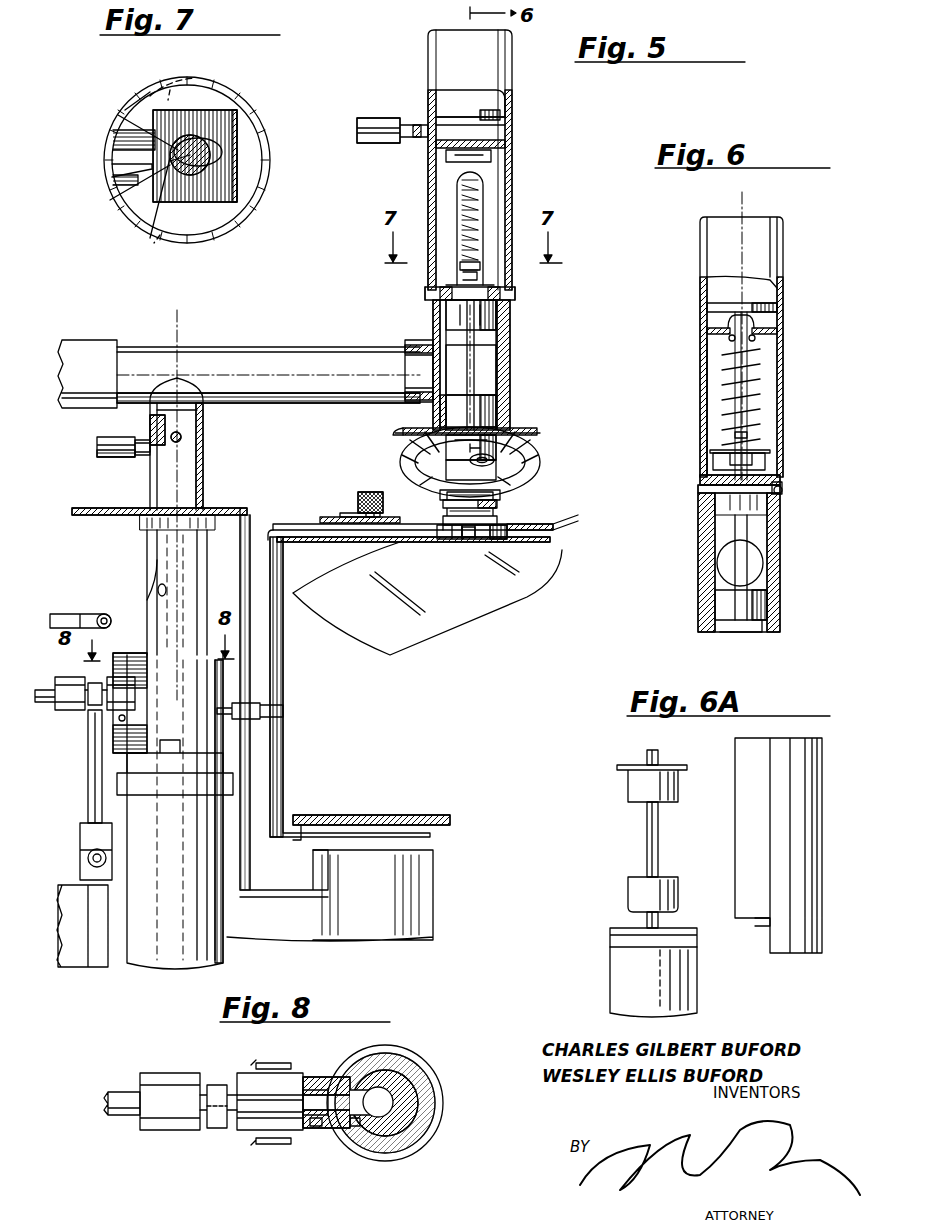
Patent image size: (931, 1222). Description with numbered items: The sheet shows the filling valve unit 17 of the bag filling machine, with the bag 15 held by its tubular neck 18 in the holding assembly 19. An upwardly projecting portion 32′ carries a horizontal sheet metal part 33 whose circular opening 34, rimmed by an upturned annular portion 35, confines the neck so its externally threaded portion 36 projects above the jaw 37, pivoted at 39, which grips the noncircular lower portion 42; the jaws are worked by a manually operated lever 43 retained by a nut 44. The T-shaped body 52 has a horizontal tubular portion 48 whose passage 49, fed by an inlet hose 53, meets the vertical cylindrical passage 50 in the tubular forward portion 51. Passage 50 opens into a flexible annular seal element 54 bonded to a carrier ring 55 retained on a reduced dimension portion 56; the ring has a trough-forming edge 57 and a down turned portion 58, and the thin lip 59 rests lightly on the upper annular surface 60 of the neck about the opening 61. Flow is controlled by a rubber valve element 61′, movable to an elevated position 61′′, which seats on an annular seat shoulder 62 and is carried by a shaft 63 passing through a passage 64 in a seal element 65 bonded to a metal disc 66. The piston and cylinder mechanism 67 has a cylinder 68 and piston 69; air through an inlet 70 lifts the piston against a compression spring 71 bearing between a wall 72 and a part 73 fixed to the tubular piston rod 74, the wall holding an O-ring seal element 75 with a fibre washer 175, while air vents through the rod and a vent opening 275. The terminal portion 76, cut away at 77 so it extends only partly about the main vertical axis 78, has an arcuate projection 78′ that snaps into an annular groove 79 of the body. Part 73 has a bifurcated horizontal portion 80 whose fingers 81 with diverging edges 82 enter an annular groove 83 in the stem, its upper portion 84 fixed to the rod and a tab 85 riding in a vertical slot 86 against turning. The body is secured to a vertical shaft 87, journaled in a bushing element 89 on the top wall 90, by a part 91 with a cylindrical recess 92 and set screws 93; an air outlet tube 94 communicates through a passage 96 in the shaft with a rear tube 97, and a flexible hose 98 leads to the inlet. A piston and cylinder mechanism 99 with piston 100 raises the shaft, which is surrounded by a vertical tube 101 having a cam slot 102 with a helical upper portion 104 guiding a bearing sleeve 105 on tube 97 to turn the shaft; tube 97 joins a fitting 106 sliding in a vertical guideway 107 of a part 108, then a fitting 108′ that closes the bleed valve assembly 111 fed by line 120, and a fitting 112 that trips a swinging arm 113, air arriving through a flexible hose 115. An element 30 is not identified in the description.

In FIG. 5, the bag 15 is at (478, 620).
In FIG. 5, the filling valve unit 17 is at (514, 374).
In FIG. 5, the inlet fitting or neck 18 is at (445, 514).
In FIG. 5, the holding assembly 19 is at (553, 523).
In FIG. 5, the base 30 is at (360, 800).
In FIG. 5, the upwardly projecting portion 32′ is at (288, 780).
In FIG. 5, the horizontal sheet metal part 33 is at (352, 543).
In FIG. 5, the circular opening 34 is at (446, 541).
In FIG. 5, the upturned annular portion 35 is at (502, 541).
In FIG. 5, the externally threaded portion 36 is at (500, 502).
In FIG. 5, the jaw 37 is at (324, 516).
In FIG. 5, the pivot 39 is at (296, 523).
In FIG. 5, the lower portion of filling neck 42 is at (465, 541).
In FIG. 5, the manually operated lever 43 is at (345, 512).
In FIG. 5, the nut 44 is at (370, 490).
In FIG. 5, the horizontal tubular portion 48 is at (310, 345).
In FIG. 5, the passage 49 is at (412, 348).
In FIG. 5, the vertical cylindrical passage 50 is at (496, 345).
In FIG. 5, the tubular forward portion 51 is at (510, 318).
In FIG. 6, the tubular forward portion 51 is at (782, 592).
In FIG. 6A, the tubular forward portion 51 is at (612, 985).
In FIG. 5, the T-shaped body 52 is at (512, 395).
In FIG. 5, the inlet hose 53 is at (100, 342).
In FIG. 5, the flexible annular seal element 54 is at (540, 465).
In FIG. 5, the carrier ring 55 is at (536, 428).
In FIG. 5, the lower reduced dimension portion 56 is at (512, 447).
In FIG. 5, the edge 57 is at (540, 433).
In FIG. 5, the down turned portion 58 is at (402, 432).
In FIG. 5, the flexible lip 59 is at (530, 486).
In FIG. 5, the upper annular surface 60 is at (490, 470).
In FIG. 5, the opening 61 is at (452, 480).
In FIG. 5, the valve element 61′ is at (440, 412).
In FIG. 6, the valve element 61′ is at (715, 605).
In FIG. 6A, the valve element 61′ is at (630, 891).
In FIG. 5, the elevated position of valve element 61′′ is at (456, 342).
In FIG. 5, the annular seat shoulder 62 is at (498, 420).
In FIG. 7, the shaft 63 is at (195, 170).
In FIG. 5, the shaft 63 is at (476, 372).
In FIG. 6, the shaft 63 is at (743, 550).
In FIG. 6A, the shaft 63 is at (648, 834).
In FIG. 5, the passage 64 is at (430, 302).
In FIG. 5, the seal or gasket element 65 is at (448, 290).
In FIG. 6, the seal or gasket element 65 is at (718, 515).
In FIG. 6A, the seal or gasket element 65 is at (630, 785).
In FIG. 7, the metal disc 66 is at (244, 177).
In FIG. 5, the metal disc 66 is at (492, 285).
In FIG. 5, the piston and cylinder mechanism 67 is at (522, 150).
In FIG. 6, the piston and cylinder mechanism 67 is at (700, 270).
In FIG. 7, the cylinder 68 is at (262, 134).
In FIG. 6, the cylinder 68 is at (783, 325).
In FIG. 6A, the cylinder 68 is at (823, 848).
In FIG. 5, the piston 69 is at (505, 115).
In FIG. 6, the piston 69 is at (762, 290).
In FIG. 5, the inlet 70 is at (410, 123).
In FIG. 5, the compression spring 71 is at (485, 195).
In FIG. 6, the compression spring 71 is at (762, 380).
In FIG. 5, the wall 72 is at (505, 168).
In FIG. 6, the wall 72 is at (765, 338).
In FIG. 7, the part 73 is at (245, 153).
In FIG. 6, the part 73 is at (772, 442).
In FIG. 6, the tubular piston rod 74 is at (738, 378).
In FIG. 6, the O-ring seal element 75 is at (728, 325).
In FIG. 6, the terminal portion 76 is at (782, 492).
In FIG. 6A, the terminal portion 76 is at (820, 955).
In FIG. 7, the cut away 77 is at (156, 256).
In FIG. 6A, the cut away 77 is at (770, 940).
In FIG. 6, the main vertical axis 78 is at (748, 199).
In FIG. 6, the arcuate projection or shoulder 78′ is at (780, 485).
In FIG. 7, the annular groove 79 is at (250, 100).
In FIG. 6, the annular groove 79 is at (702, 495).
In FIG. 6A, the annular groove 79 is at (612, 940).
In FIG. 7, the horizontally extending portion 80 is at (170, 110).
In FIG. 6, the horizontally extending portion 80 is at (700, 478).
In FIG. 6A, the horizontally extending portion 80 is at (752, 925).
In FIG. 7, the fingers or arms 81 is at (150, 190).
In FIG. 7, the diverging edges 82 is at (140, 170).
In FIG. 7, the annular groove 83 is at (165, 172).
In FIG. 6A, the annular groove 83 is at (645, 755).
In FIG. 6, the upper portion 84 is at (712, 462).
In FIG. 5, the tab 85 is at (478, 250).
In FIG. 6, the tab 85 is at (710, 449).
In FIG. 7, the vertical slot 86 is at (160, 138).
In FIG. 6, the vertical slot 86 is at (707, 405).
In FIG. 5, the shaft 87 is at (148, 600).
In FIG. 8, the shaft 87 is at (408, 1120).
In FIG. 5, the bushing element 89 is at (204, 470).
In FIG. 5, the top wall 90 is at (230, 508).
In FIG. 5, the part 91 is at (200, 427).
In FIG. 5, the cylindrical recess 92 is at (152, 427).
In FIG. 5, the set screws 93 is at (182, 440).
In FIG. 5, the air outlet tube 94 is at (142, 458).
In FIG. 5, the passage 96 is at (162, 520).
In FIG. 8, the passage 96 is at (388, 1102).
In FIG. 8, the tube 97 is at (352, 1128).
In FIG. 5, the flexible hose 98 is at (385, 142).
In FIG. 5, the piston and cylinder mechanism 99 is at (225, 955).
In FIG. 5, the piston 100 is at (160, 965).
In FIG. 5, the vertical tube 101 is at (236, 620).
In FIG. 8, the vertical tube 101 is at (418, 1088).
In FIG. 5, the cam slot 102 is at (158, 590).
In FIG. 8, the cam slot 102 is at (320, 1126).
In FIG. 5, the helically extending upper portion 104 is at (155, 612).
In FIG. 8, the bearing sleeve 105 is at (318, 1077).
In FIG. 8, the fitting 106 is at (250, 1075).
In FIG. 8, the vertical guideway 107 is at (262, 1142).
In FIG. 8, the part 108 is at (302, 1140).
In FIG. 5, the tubular air conducting fitting 108′ is at (90, 730).
In FIG. 8, the tubular air conducting fitting 108′ is at (220, 1083).
In FIG. 5, the bleed valve assembly 111 is at (80, 852).
In FIG. 5, the fitting 112 is at (60, 706).
In FIG. 8, the fitting 112 is at (168, 1073).
In FIG. 5, the swinging arm 113 is at (70, 715).
In FIG. 8, the flexible hose 115 is at (114, 1090).
In FIG. 5, the line 120 is at (86, 860).
In FIG. 6, the fibre washer 175 is at (756, 340).
In FIG. 6, the vent opening 275 is at (735, 436).